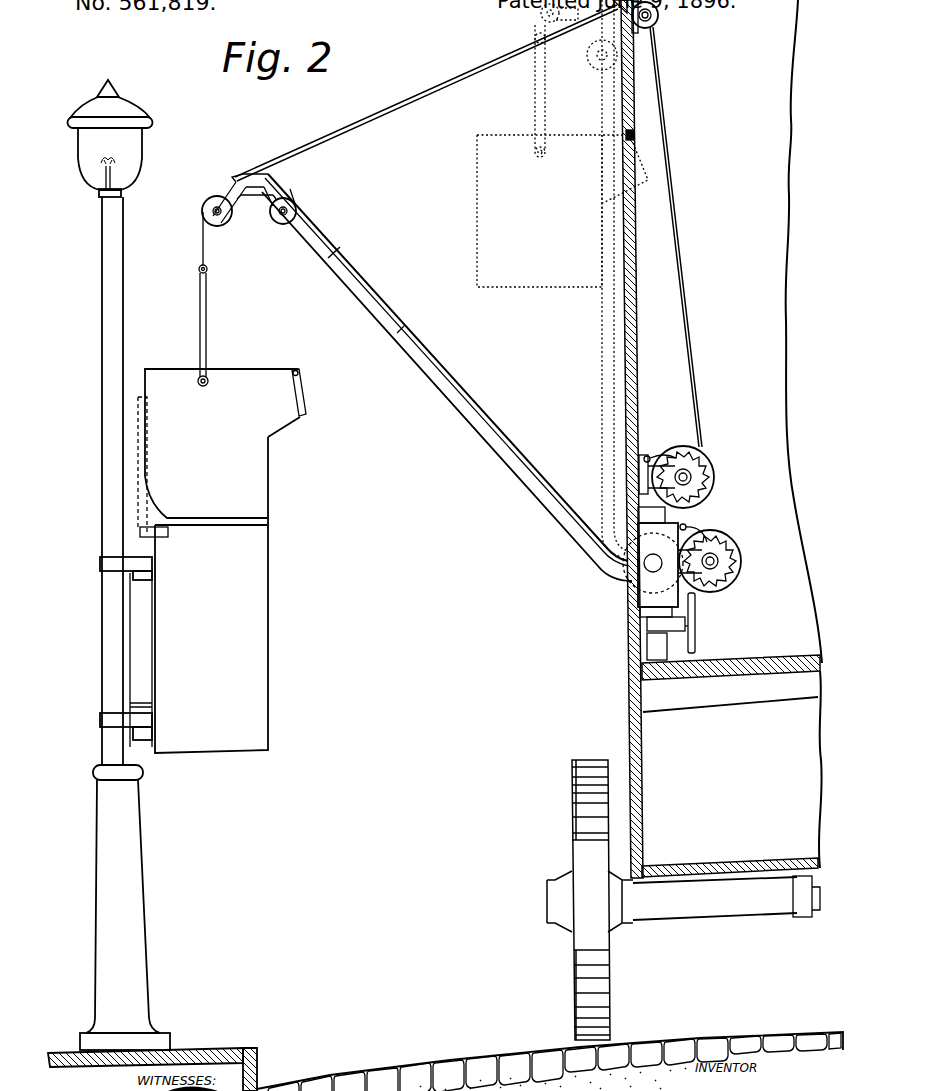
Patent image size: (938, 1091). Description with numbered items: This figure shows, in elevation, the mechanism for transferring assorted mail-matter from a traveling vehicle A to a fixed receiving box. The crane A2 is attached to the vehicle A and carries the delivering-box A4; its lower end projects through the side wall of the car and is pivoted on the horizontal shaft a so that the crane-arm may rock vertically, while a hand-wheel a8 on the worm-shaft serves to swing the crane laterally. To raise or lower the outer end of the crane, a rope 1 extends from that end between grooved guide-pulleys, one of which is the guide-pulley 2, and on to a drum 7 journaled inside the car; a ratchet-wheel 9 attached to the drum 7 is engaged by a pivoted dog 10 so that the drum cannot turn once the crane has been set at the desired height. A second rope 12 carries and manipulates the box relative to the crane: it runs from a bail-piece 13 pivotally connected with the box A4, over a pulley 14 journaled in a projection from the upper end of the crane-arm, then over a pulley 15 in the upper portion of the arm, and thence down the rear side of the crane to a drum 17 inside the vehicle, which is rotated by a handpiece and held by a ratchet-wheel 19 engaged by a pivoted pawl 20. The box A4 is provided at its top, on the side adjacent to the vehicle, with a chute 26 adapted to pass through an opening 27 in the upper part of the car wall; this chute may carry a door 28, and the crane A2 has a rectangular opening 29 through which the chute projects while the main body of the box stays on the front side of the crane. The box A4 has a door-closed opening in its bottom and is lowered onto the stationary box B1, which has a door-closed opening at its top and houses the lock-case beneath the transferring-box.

The rope 1 is at (696, 398).
The guide-pulley 2 is at (470, 405).
The drum 7 is at (712, 497).
The ratchet-wheel 9 is at (700, 481).
The pivoted dog 10 is at (649, 457).
The rope 12 is at (346, 246).
The bail-piece 13 is at (208, 301).
The pulley 14 is at (228, 231).
The pulley 15 is at (284, 226).
The drum 17 is at (740, 576).
The ratchet-wheel 19 is at (729, 560).
The pivoted pawl 20 is at (692, 528).
The chute 26 is at (283, 423).
The opening 27 is at (640, 136).
The door 28 is at (308, 383).
The rectangular opening 29 is at (373, 315).
The shaft a is at (651, 567).
The hand-wheel a8 is at (696, 634).
The vehicle A is at (778, 331).
The delivering-box A4 is at (218, 453).
The stationary box B1 is at (211, 595).